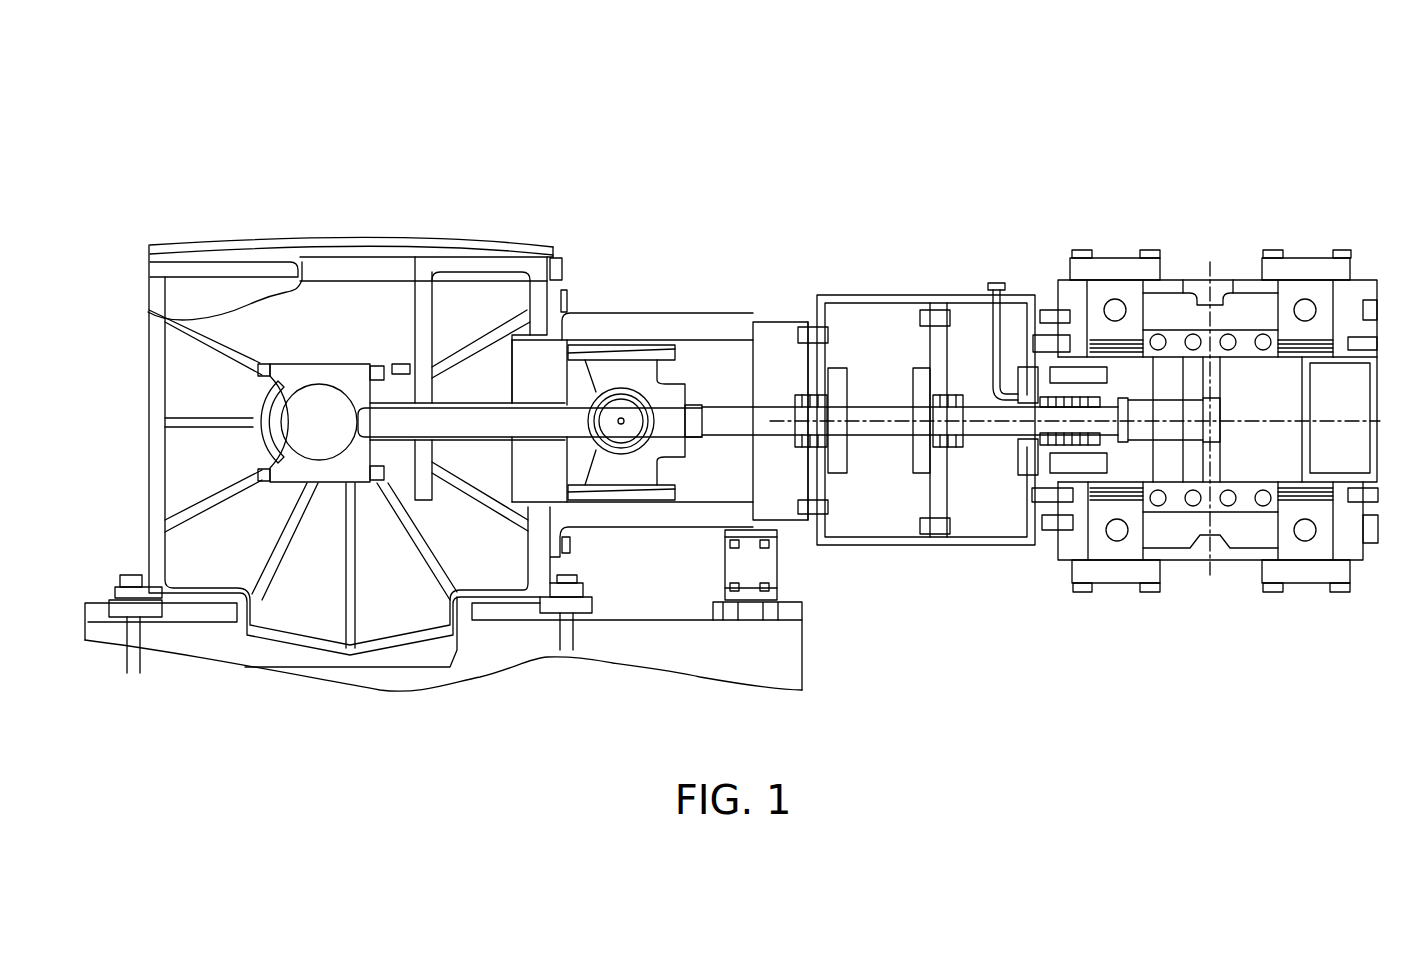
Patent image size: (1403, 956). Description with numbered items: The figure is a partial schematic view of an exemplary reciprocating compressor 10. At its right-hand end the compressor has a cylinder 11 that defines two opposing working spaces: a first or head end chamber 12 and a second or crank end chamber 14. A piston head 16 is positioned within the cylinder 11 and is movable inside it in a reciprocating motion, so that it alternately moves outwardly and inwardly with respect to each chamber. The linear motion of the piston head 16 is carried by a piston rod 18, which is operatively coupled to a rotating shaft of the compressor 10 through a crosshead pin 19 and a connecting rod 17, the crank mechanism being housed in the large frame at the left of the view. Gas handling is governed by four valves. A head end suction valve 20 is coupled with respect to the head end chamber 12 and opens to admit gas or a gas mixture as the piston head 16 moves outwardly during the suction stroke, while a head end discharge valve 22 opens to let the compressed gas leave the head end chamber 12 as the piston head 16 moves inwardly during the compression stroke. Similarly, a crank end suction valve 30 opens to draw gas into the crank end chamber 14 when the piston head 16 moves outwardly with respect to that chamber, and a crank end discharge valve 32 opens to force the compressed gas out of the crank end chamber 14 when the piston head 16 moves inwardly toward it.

The reciprocating compressor 10 is at (907, 148).
The cylinder 11 is at (1244, 262).
The head end chamber 12 is at (1292, 370).
The crank end chamber 14 is at (1137, 372).
The piston head 16 is at (1165, 377).
The connecting rod 17 is at (548, 403).
The piston rod 18 is at (763, 415).
The crosshead pin 19 is at (622, 405).
The head end suction valve 20 is at (1327, 298).
The head end discharge valve 22 is at (1312, 548).
The crank end suction valve 30 is at (1095, 300).
The crank end discharge valve 32 is at (1120, 548).